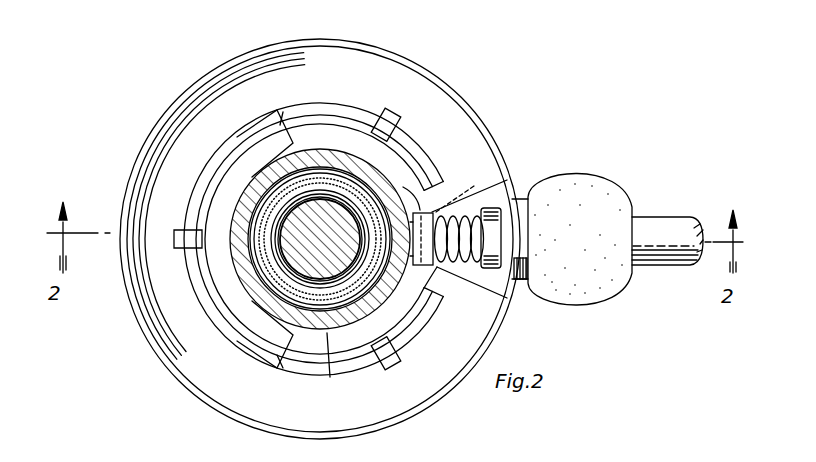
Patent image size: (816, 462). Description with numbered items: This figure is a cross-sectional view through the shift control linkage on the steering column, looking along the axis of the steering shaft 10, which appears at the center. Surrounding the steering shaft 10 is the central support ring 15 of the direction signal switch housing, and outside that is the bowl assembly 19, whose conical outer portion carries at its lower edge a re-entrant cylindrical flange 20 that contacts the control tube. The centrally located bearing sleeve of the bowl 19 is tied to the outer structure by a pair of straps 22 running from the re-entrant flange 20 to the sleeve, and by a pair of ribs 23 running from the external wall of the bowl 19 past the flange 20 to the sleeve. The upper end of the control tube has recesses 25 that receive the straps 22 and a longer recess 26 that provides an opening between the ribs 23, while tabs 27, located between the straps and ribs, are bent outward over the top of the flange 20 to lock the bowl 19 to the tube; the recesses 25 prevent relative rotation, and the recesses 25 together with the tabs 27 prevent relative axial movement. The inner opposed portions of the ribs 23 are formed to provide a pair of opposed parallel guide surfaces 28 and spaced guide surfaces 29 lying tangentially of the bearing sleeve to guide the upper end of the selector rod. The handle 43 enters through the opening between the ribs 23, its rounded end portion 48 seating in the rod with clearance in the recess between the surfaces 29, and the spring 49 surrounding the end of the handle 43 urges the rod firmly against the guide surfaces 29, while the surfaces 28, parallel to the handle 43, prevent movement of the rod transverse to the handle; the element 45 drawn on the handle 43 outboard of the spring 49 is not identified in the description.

The steering shaft 10 is at (319, 200).
The central support ring 15 is at (329, 368).
The bowl assembly 19 is at (457, 91).
The re-entrant cylindrical flange 20 is at (203, 307).
The straps 22 is at (253, 130).
The ribs 23 is at (490, 186).
The recesses 25 is at (287, 120).
The longer recess 26 is at (430, 285).
The tabs 27 is at (393, 118).
The guide surfaces 28 is at (420, 211).
The guide surfaces 29 is at (360, 290).
The handle 43 is at (653, 223).
The knob 45 is at (588, 190).
The rounded end portion 48 is at (456, 188).
The spring 49 is at (482, 270).